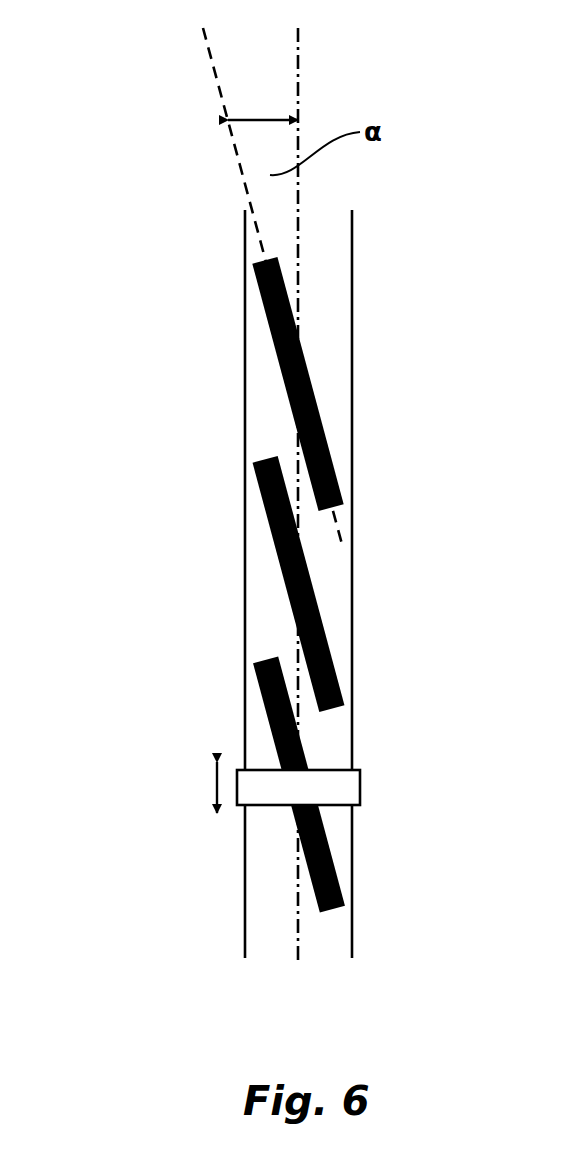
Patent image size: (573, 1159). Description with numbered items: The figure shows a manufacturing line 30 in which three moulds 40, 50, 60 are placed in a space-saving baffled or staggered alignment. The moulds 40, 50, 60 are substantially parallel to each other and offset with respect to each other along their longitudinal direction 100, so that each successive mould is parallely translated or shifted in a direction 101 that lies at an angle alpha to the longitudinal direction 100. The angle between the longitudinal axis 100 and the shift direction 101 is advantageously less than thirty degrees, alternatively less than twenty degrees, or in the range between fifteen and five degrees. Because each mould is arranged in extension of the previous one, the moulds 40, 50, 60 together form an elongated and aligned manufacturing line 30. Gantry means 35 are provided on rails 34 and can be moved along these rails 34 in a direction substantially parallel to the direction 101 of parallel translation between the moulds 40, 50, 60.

The manufacturing line 30 is at (145, 550).
The rails 34 is at (245, 323).
The gantry means 35 is at (287, 787).
The mould 40 is at (307, 830).
The mould 50 is at (300, 582).
The mould 60 is at (297, 378).
The longitudinal direction 100 is at (213, 78).
The direction of parallel translation 101 is at (298, 60).